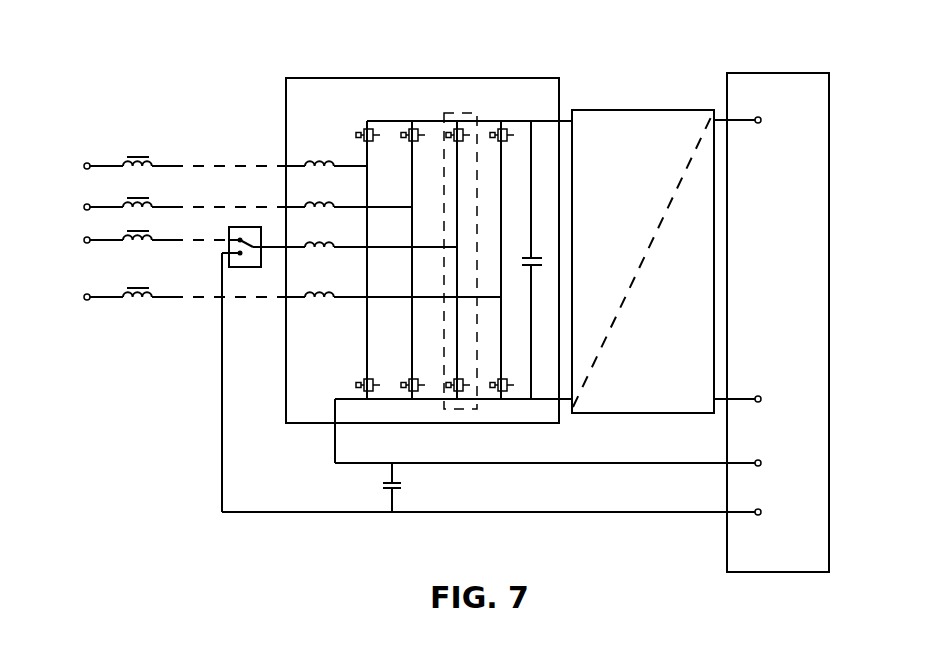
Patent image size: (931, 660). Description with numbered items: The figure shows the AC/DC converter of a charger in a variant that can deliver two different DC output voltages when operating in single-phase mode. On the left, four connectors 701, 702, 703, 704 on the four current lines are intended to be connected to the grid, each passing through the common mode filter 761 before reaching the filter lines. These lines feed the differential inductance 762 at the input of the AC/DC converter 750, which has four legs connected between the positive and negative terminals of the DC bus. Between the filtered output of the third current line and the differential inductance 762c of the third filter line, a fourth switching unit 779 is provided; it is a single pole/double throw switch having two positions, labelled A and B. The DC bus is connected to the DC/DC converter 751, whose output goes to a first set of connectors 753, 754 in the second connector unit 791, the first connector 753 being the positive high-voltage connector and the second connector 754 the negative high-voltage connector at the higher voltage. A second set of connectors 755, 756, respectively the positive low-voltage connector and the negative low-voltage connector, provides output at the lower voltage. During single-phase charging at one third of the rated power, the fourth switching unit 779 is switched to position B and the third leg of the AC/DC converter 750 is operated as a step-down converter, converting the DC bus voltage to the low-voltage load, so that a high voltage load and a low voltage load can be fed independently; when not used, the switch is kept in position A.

The connector of charger intended to be connected to the grid 701 is at (75, 156).
The connector of charger intended to be connected to the grid 702 is at (75, 200).
The connector of charger intended to be connected to the grid 703 is at (75, 232).
The connector of charger intended to be connected to the grid 704 is at (75, 289).
The common mode filter 761 is at (204, 191).
The fourth switching unit 779 is at (248, 362).
The AC/DC converter 750 is at (429, 229).
The differential inductance 762 is at (393, 203).
The differential inductance of current line N3 762c is at (371, 259).
The DC/DC converter 751 is at (643, 227).
The second connector unit 791 is at (525, 299).
The positive connector HV+ 753 is at (766, 127).
The negative connector HV- 754 is at (766, 407).
The positive connector LV+ 755 is at (520, 523).
The negative connector LV- 756 is at (576, 445).